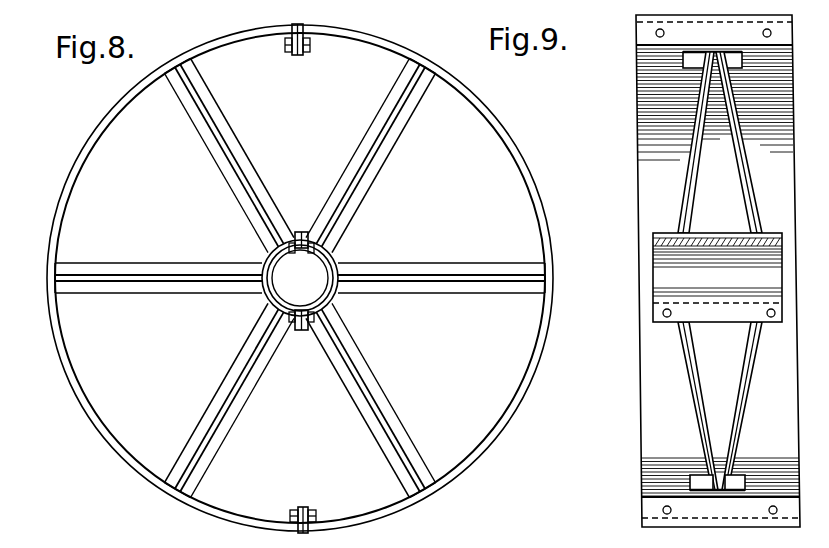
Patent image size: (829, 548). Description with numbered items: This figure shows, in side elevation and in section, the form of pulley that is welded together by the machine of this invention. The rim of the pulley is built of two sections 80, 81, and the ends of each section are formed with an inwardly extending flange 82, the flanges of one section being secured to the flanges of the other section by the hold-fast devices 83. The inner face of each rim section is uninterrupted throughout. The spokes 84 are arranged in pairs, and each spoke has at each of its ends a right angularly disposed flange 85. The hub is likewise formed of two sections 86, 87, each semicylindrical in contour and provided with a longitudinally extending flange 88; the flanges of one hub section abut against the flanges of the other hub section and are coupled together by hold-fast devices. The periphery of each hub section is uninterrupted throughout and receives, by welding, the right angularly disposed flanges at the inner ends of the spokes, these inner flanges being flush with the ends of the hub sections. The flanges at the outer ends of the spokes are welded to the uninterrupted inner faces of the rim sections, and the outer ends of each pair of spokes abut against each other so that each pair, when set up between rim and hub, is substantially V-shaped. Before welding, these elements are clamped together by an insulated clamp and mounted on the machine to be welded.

In FIG. 8, the rim section 80 is at (500, 125).
In FIG. 9, the rim section 80 is at (718, 281).
In FIG. 8, the rim section 81 is at (118, 110).
In FIG. 8, the inwardly extending flange 82 is at (300, 507).
In FIG. 9, the inwardly extending flange 82 is at (717, 496).
In FIG. 8, the hold-fast devices 83 is at (311, 510).
In FIG. 8, the spokes 84 is at (383, 165).
In FIG. 9, the spokes 84 is at (740, 176).
In FIG. 9, the right angularly disposed flange 85 is at (695, 60).
In FIG. 8, the hub section 86 is at (323, 267).
In FIG. 8, the hub section 87 is at (279, 288).
In FIG. 8, the longitudinally extending flange 88 is at (303, 333).
In FIG. 9, the longitudinally extending flange 88 is at (722, 323).